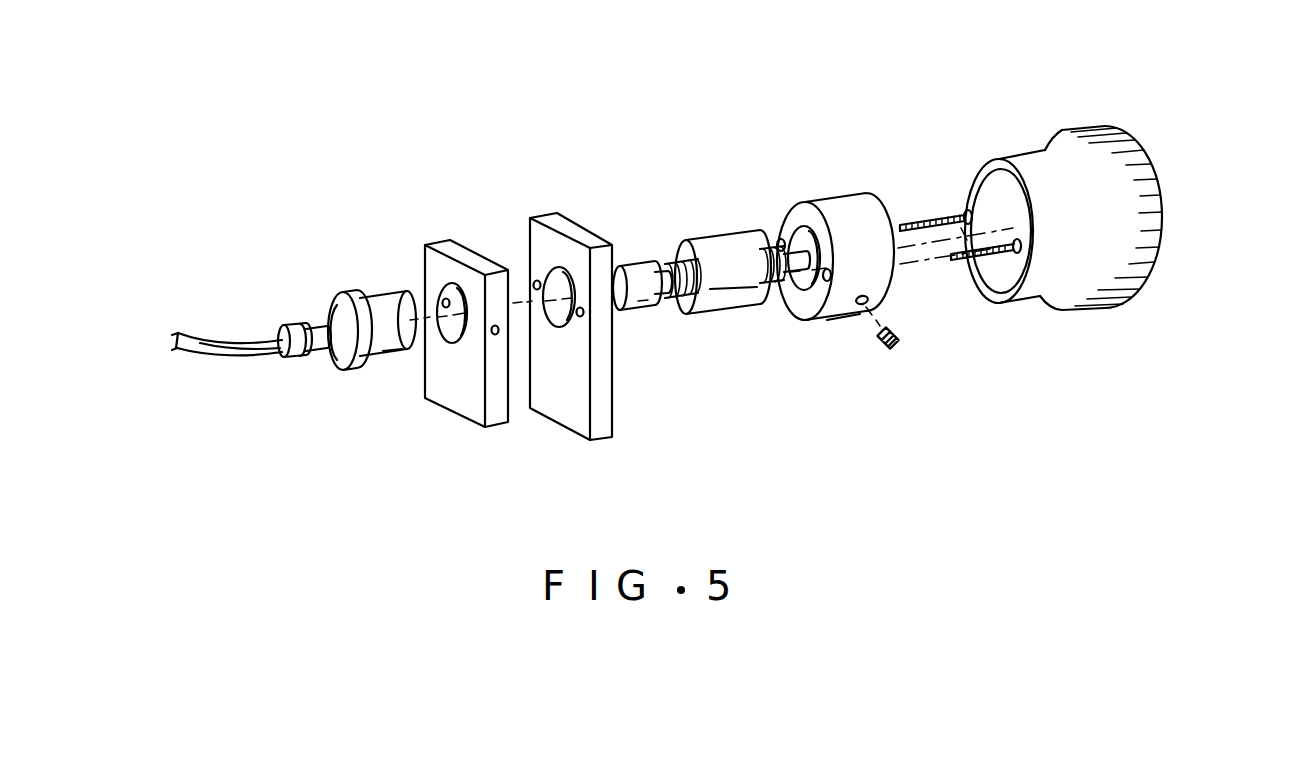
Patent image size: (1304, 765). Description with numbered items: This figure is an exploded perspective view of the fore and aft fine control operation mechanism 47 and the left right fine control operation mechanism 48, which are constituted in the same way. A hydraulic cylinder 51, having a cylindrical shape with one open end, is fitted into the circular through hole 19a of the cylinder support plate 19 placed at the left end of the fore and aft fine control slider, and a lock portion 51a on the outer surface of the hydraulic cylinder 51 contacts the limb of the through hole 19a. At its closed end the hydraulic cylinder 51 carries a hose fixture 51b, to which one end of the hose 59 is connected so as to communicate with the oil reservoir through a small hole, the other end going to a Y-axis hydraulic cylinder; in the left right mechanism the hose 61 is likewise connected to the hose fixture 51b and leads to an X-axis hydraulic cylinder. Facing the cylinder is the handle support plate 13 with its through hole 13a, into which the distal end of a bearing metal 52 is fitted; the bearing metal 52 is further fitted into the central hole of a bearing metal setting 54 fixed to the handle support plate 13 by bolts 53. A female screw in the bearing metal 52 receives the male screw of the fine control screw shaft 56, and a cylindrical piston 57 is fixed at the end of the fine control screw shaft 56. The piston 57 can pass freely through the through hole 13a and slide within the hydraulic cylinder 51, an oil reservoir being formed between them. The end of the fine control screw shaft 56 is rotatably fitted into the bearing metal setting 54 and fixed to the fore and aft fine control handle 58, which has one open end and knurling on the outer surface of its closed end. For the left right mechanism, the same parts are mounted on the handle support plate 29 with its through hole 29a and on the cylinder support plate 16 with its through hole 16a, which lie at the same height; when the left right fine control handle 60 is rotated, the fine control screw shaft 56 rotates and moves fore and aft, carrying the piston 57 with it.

The hose 59 is at (216, 290).
The hose 61 is at (208, 334).
The hydraulic cylinder 51 is at (372, 284).
The lock portion 51a is at (338, 296).
The hose fixture 51b is at (312, 328).
The cylinder support plate 19 is at (428, 309).
The cylinder support plate 16 is at (428, 309).
The through hole 19a is at (407, 367).
The through hole 16a is at (453, 338).
The handle support plate 13 is at (626, 284).
The handle support plate 29 is at (626, 284).
The through hole 13a is at (641, 316).
The through hole 29a is at (562, 308).
The piston 57 is at (632, 264).
The fine control screw shaft 56 is at (668, 264).
The bearing metal 52 is at (722, 312).
The bearing metal setting 54 is at (835, 204).
The bolts 53 is at (966, 207).
The fore and aft fine control handle 58 is at (1106, 218).
The left right fine control handle 60 is at (1140, 194).
The fore and aft fine control operation mechanism 47 is at (665, 169).
The left right fine control operation mechanism 48 is at (697, 143).